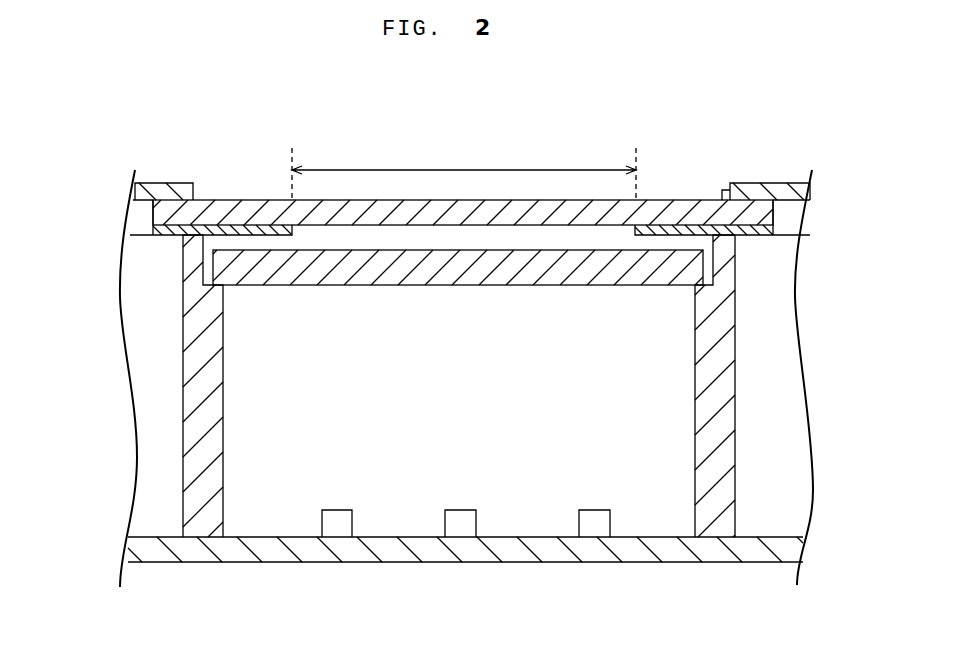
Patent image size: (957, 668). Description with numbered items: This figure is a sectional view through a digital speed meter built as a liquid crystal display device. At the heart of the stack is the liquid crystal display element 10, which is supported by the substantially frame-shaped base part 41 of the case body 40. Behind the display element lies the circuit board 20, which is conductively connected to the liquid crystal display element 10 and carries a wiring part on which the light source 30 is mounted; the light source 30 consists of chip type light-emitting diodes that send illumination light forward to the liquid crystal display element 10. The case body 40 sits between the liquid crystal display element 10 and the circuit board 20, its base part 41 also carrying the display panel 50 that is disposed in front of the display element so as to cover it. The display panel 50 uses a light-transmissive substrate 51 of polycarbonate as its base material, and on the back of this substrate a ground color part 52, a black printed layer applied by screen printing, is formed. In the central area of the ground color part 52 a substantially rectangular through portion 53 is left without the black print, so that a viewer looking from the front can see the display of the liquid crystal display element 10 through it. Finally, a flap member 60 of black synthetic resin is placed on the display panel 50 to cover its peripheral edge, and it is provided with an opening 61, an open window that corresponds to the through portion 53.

The liquid crystal display element 10 is at (328, 275).
The circuit board 20 is at (552, 548).
The light source 30 is at (458, 523).
The case body 40 is at (420, 386).
The base part 41 is at (198, 437).
The display panel 50 is at (463, 163).
The light-transmissive substrate 51 is at (697, 217).
The ground color part 52 is at (210, 228).
The through portion 53 is at (365, 168).
The flap member 60 is at (165, 190).
The opening 61 is at (723, 188).